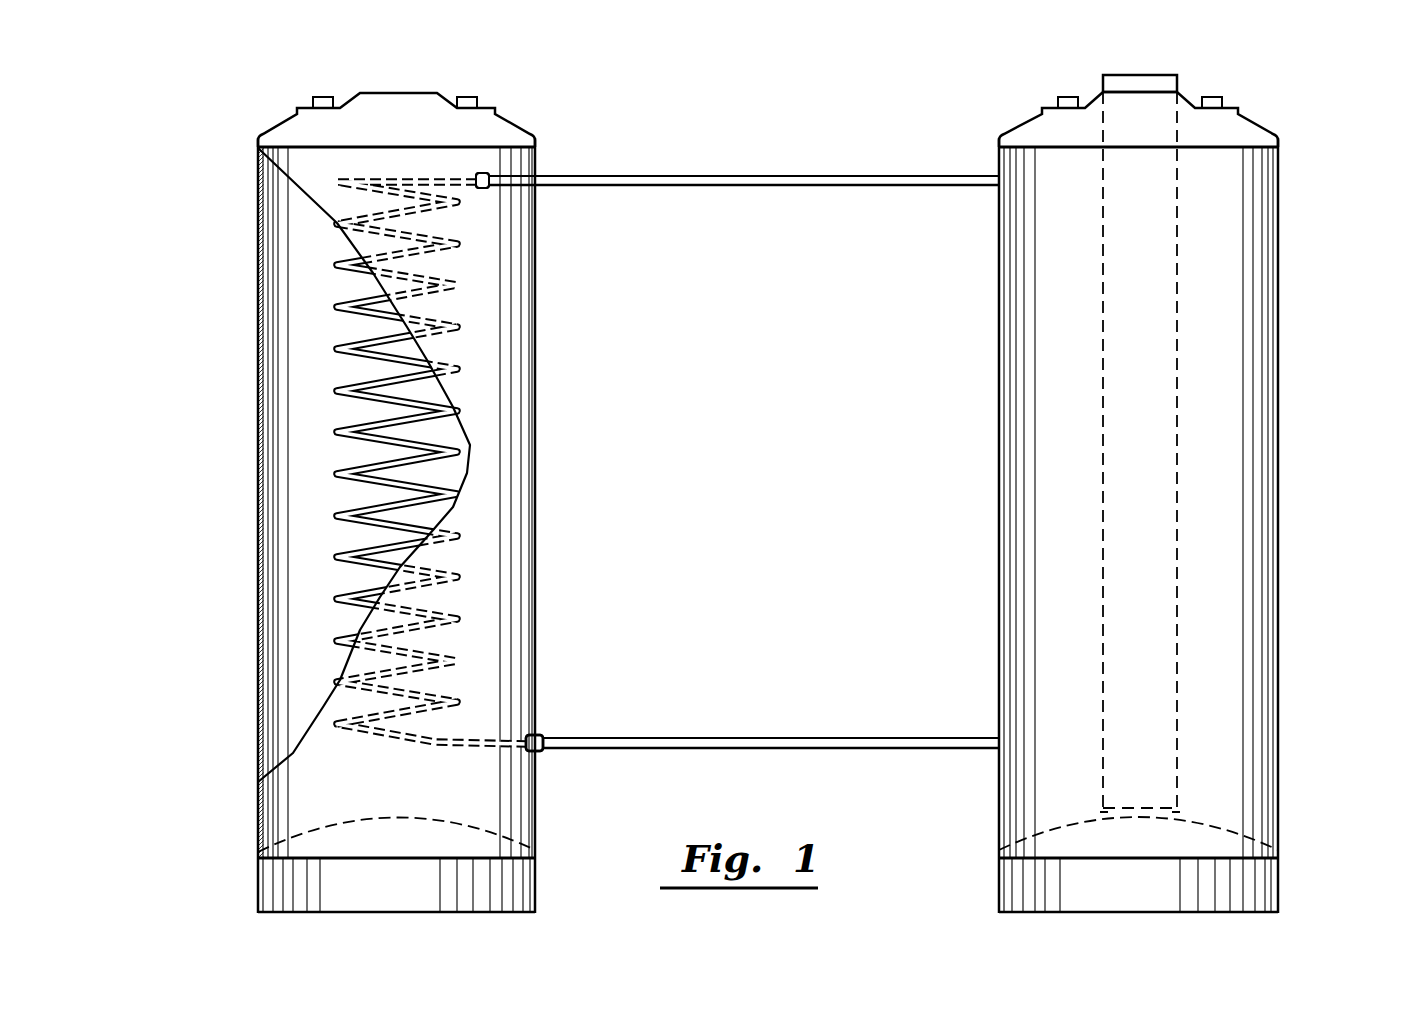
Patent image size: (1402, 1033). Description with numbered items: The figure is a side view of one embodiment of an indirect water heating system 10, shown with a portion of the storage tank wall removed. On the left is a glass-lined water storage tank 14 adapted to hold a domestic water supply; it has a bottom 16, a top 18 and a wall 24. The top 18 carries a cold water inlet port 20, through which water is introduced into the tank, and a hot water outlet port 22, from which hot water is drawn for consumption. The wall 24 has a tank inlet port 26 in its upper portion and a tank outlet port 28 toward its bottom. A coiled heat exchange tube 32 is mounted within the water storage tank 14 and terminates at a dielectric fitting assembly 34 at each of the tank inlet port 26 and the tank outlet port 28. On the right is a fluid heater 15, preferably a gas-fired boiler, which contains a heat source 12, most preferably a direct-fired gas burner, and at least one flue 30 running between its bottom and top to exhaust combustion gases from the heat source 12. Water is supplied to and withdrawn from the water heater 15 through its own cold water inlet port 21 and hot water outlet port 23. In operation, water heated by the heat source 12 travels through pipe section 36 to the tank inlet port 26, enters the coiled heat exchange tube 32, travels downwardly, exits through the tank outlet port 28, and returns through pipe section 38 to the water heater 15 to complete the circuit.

The indirect water heating system 10 is at (228, 673).
The heat source 12 is at (997, 879).
The water storage tank 14 is at (540, 427).
The fluid heater 15 is at (1283, 430).
The bottom 16 is at (282, 833).
The top 18 is at (267, 133).
The cold water inlet port 20 is at (477, 103).
The cold water inlet port 21 is at (1225, 101).
The hot water outlet port 22 is at (313, 102).
The hot water outlet port 23 is at (1058, 101).
The wall 24 is at (312, 402).
The tank inlet port 26 is at (487, 189).
The tank outlet port 28 is at (541, 752).
The flue 30 is at (1102, 533).
The coiled heat exchange tube 32 is at (337, 597).
The dielectric fitting assembly 34 is at (490, 176).
The pipe section 36 is at (758, 187).
The pipe section 38 is at (750, 738).